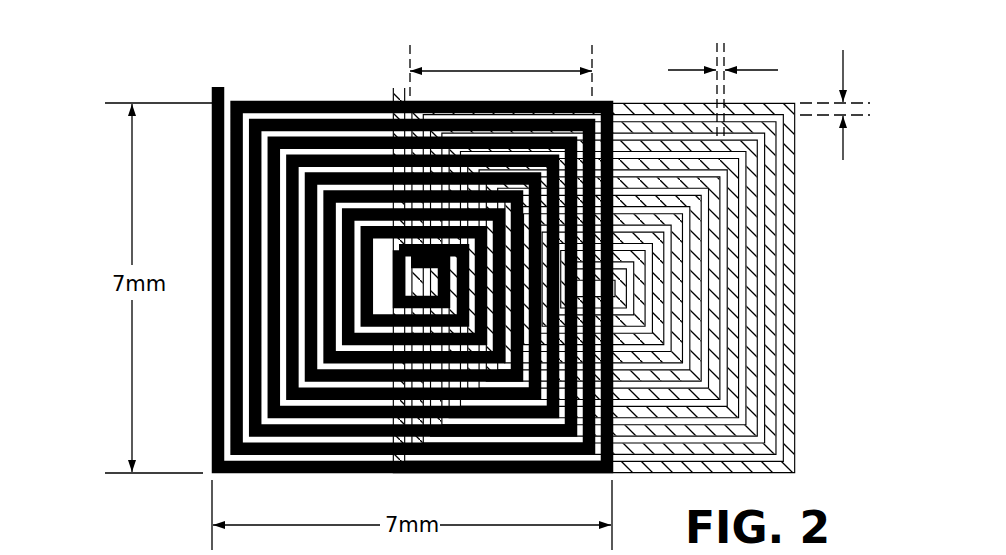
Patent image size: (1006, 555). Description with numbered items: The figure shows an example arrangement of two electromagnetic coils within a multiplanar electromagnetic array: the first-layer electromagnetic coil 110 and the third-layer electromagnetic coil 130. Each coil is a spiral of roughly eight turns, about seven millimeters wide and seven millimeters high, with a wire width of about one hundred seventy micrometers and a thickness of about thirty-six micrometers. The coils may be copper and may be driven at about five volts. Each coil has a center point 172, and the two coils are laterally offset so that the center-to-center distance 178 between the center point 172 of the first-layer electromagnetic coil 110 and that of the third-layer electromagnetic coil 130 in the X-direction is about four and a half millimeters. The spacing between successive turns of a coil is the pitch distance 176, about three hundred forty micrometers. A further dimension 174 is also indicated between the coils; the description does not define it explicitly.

The first-layer electromagnetic coil 110 is at (793, 347).
The third-layer electromagnetic coil 130 is at (336, 100).
The center point 172 is at (398, 278).
The vertical offset between coils 174 is at (843, 152).
The pitch distance 176 is at (760, 70).
The center-to-center distance 178 is at (495, 71).